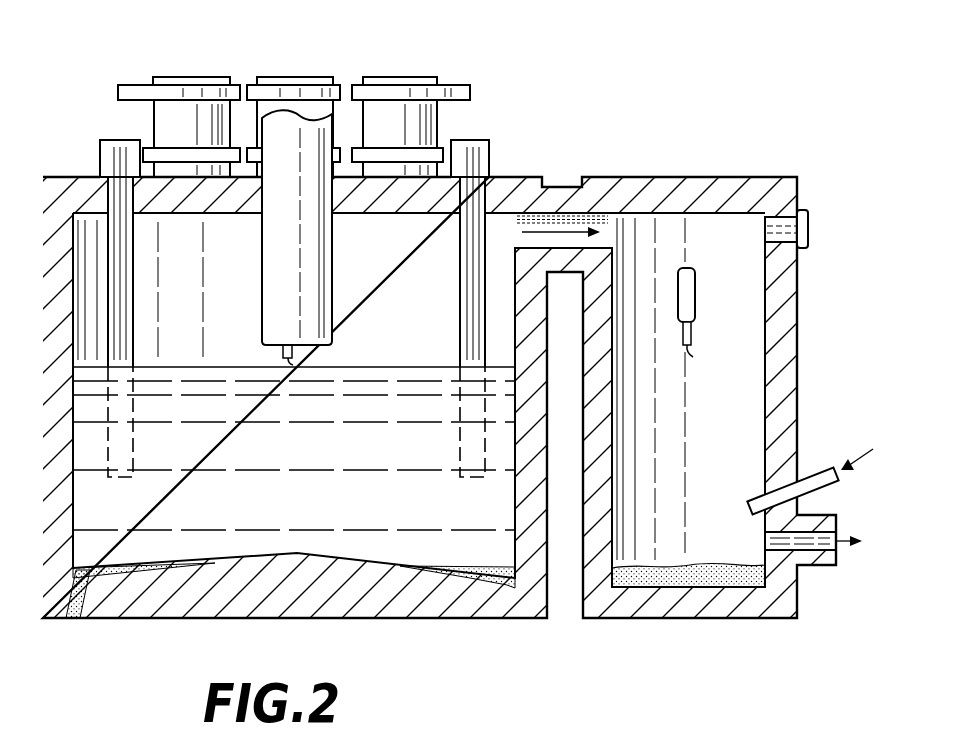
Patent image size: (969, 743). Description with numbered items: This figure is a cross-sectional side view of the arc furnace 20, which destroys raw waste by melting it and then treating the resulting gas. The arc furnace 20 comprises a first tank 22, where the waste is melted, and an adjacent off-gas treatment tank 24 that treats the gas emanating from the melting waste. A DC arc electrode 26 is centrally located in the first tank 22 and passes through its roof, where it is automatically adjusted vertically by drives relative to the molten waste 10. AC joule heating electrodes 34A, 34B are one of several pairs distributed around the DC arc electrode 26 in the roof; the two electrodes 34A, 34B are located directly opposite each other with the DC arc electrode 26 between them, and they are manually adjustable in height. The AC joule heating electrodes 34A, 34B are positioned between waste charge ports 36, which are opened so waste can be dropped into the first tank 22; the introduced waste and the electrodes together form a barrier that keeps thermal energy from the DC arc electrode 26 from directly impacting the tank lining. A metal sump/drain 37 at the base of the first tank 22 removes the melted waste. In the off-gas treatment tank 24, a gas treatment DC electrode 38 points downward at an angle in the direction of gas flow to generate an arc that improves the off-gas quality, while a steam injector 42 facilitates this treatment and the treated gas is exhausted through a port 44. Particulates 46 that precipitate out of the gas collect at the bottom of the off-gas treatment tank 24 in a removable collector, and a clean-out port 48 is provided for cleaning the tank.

The molten waste 10 is at (315, 509).
The arc furnace 20 is at (657, 106).
The first tank 22 is at (43, 590).
The off-gas treatment tank 24 is at (687, 177).
The DC arc electrode 26 is at (322, 248).
The AC joule heating electrode 34A is at (113, 224).
The AC joule heating electrode 34B is at (485, 193).
The waste charge ports 36 is at (192, 77).
The metal sump/drain 37 is at (85, 570).
The gas treatment DC electrode 38 is at (697, 304).
The steam injector 42 is at (820, 463).
The port 44 is at (836, 535).
The particulates 46 is at (710, 585).
The clean-out port 48 is at (808, 228).